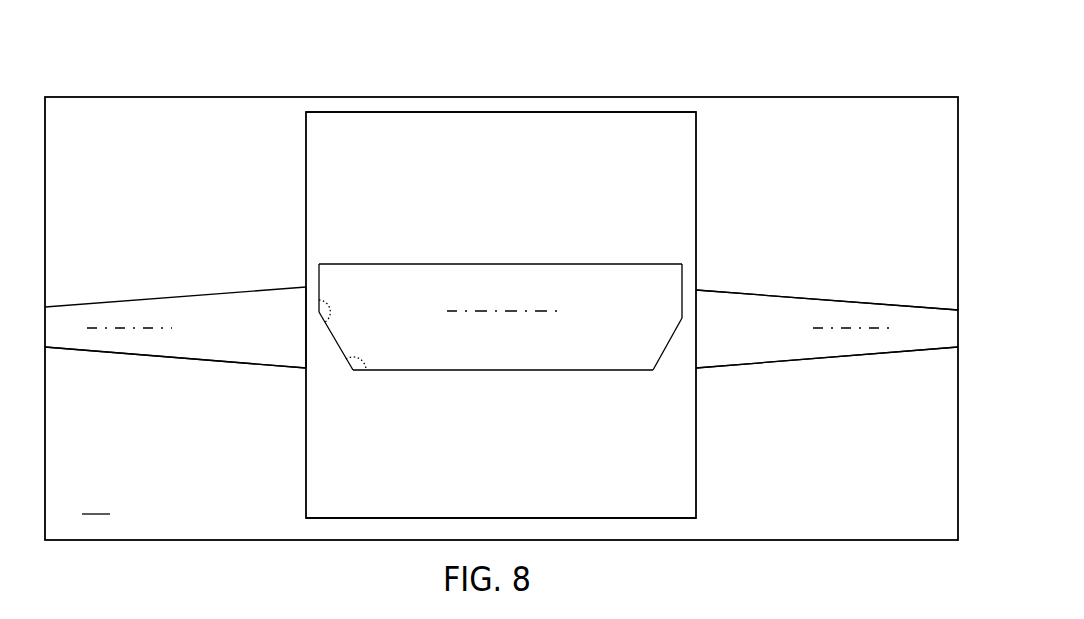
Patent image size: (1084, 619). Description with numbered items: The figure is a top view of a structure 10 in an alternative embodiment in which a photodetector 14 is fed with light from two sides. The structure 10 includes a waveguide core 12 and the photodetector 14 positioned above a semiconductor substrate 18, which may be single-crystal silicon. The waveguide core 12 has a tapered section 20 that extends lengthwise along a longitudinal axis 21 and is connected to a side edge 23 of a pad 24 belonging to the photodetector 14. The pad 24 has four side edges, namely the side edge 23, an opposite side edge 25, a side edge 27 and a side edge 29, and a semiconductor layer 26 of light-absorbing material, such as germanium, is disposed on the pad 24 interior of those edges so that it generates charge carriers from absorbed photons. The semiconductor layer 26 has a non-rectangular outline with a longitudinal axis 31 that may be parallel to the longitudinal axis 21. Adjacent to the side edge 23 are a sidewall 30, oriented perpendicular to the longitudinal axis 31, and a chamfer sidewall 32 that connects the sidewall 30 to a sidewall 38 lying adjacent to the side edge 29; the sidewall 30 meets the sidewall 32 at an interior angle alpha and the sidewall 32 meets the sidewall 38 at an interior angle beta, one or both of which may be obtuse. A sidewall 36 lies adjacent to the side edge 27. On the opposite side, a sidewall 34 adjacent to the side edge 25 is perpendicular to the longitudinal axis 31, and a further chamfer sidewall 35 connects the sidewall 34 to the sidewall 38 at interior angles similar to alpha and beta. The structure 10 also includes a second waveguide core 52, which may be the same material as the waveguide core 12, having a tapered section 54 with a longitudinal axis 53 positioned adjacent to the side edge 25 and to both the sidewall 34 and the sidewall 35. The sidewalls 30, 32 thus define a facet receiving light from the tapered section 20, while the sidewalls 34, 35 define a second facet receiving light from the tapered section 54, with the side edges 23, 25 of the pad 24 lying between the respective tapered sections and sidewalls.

The structure 10 is at (147, 74).
The waveguide core 12 is at (164, 284).
The photodetector 14 is at (287, 165).
The semiconductor substrate 18 is at (95, 503).
The tapered section 20 is at (197, 337).
The longitudinal axis 21 is at (140, 328).
The side edge 23 is at (306, 319).
The pad 24 is at (338, 497).
The side edge 25 is at (697, 355).
The semiconductor layer 26 is at (535, 337).
The side edge 27 is at (533, 112).
The side edge 29 is at (500, 518).
The sidewall 30 is at (320, 278).
The longitudinal axis 31 is at (467, 312).
The sidewall 32 is at (337, 340).
The sidewall 34 is at (682, 288).
The sidewall 35 is at (672, 338).
The sidewall 36 is at (468, 264).
The sidewall 38 is at (468, 372).
The waveguide core 52 is at (849, 281).
The longitudinal axis 53 is at (865, 330).
The tapered section 54 is at (785, 317).